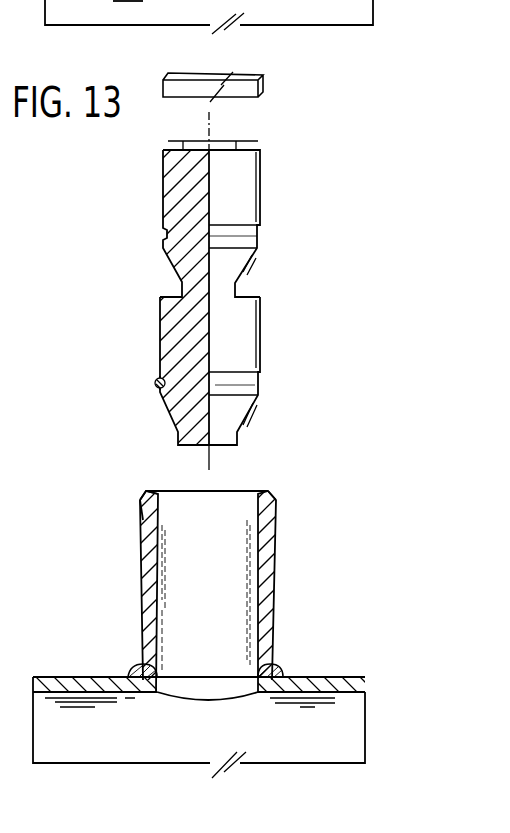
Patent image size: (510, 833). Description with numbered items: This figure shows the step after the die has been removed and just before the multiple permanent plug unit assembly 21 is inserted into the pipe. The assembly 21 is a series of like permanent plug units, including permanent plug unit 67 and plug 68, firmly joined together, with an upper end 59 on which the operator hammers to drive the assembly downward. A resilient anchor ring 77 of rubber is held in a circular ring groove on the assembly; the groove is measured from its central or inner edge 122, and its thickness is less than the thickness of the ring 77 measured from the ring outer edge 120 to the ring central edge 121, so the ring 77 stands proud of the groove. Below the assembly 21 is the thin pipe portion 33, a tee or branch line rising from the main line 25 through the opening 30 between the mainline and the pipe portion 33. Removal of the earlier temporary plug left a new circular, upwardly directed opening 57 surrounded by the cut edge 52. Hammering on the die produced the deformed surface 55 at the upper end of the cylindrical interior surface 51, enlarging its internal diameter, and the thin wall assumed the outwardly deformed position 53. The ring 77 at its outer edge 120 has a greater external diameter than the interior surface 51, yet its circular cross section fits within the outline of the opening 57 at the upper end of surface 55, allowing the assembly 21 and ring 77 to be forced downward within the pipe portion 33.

The multiple permanent plug unit assembly 21 is at (350, 80).
The main line 25 is at (292, 683).
The opening 30 is at (200, 699).
The pipe portion 33 is at (272, 625).
The cylindrical interior surface 51 is at (151, 625).
The cut edge 52 is at (271, 497).
The outwardly deformed position 53 is at (139, 501).
The deformed surface 55 is at (158, 490).
The opening 57 is at (244, 491).
The upper end 59 is at (216, 78).
The permanent plug unit 67 is at (162, 223).
The plug 68 is at (270, 341).
The resilient anchor ring 77 is at (259, 374).
The ring outer edge 120 is at (148, 387).
The ring central edge 121 is at (158, 375).
The central edge of groove 122 is at (253, 220).